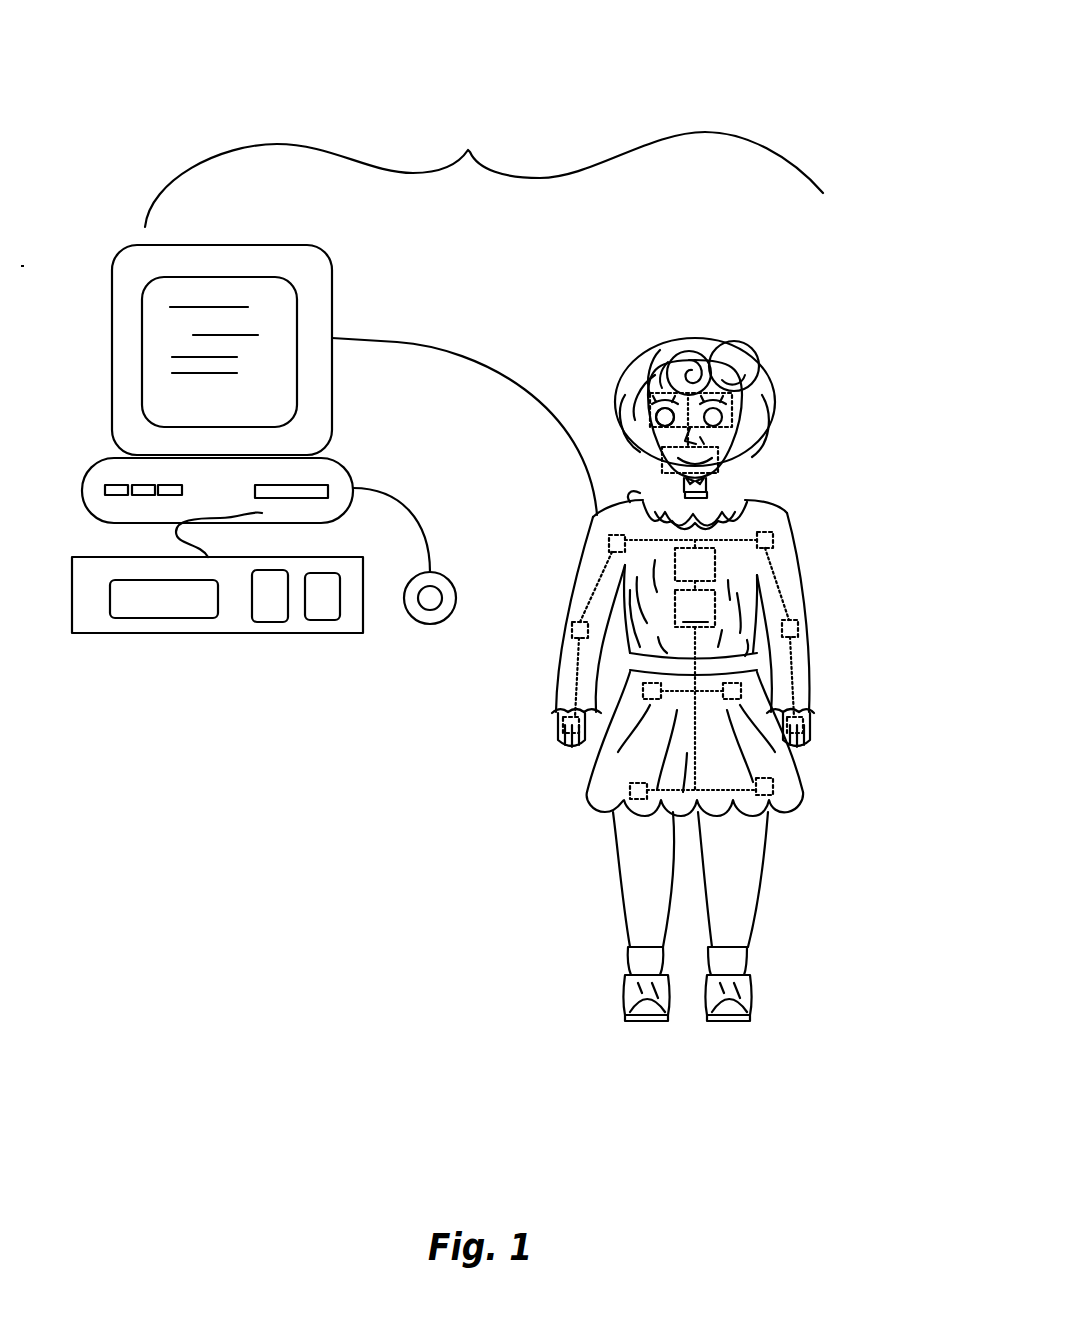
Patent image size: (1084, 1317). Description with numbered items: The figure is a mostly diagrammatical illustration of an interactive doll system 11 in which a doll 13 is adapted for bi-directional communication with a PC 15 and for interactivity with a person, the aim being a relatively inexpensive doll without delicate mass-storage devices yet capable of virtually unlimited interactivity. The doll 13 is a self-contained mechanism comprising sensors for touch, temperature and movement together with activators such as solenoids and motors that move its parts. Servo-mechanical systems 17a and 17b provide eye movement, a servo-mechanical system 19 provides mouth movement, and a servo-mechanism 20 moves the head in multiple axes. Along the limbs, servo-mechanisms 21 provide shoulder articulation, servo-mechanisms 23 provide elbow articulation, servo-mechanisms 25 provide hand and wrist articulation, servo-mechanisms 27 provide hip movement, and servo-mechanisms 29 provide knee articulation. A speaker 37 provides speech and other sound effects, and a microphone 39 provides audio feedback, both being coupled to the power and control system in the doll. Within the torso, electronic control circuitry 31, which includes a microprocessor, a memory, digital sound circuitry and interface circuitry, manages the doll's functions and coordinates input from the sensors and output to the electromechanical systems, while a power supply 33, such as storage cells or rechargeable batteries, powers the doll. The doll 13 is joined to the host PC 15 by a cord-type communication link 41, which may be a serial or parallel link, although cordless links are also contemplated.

The interactive doll system 11 is at (503, 118).
The doll 13 is at (640, 312).
The PC 15 is at (240, 220).
The servo-mechanical system 17a is at (660, 375).
The servo-mechanical system 17b is at (713, 380).
The servo-mechanical system 19 is at (712, 393).
The servo-mechanism 20 is at (720, 462).
The servo-mechanisms 21 is at (612, 535).
The servo-mechanisms 23 is at (578, 622).
The servo-mechanisms 25 is at (568, 715).
The servo-mechanisms 27 is at (650, 699).
The servo-mechanisms 29 is at (638, 800).
The electronic control circuitry 31 is at (695, 685).
The power supply 33 is at (695, 560).
The speaker 37 is at (708, 438).
The microphone 39 is at (655, 413).
The cord-type communication link 41 is at (395, 343).